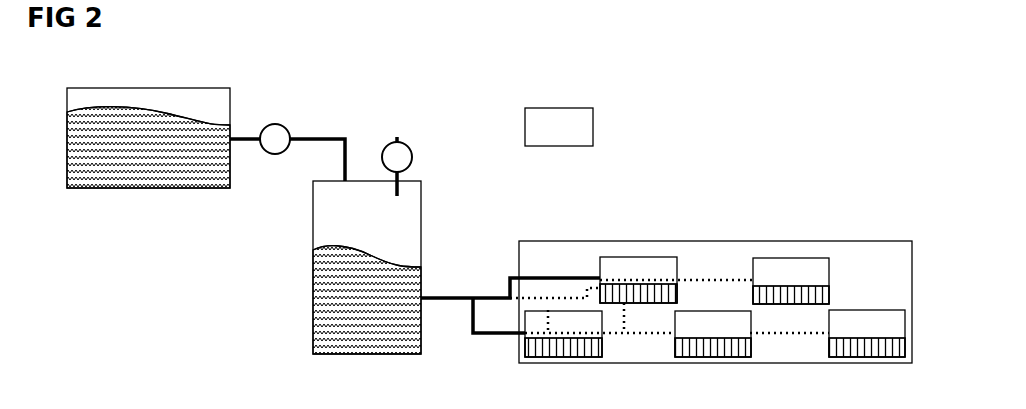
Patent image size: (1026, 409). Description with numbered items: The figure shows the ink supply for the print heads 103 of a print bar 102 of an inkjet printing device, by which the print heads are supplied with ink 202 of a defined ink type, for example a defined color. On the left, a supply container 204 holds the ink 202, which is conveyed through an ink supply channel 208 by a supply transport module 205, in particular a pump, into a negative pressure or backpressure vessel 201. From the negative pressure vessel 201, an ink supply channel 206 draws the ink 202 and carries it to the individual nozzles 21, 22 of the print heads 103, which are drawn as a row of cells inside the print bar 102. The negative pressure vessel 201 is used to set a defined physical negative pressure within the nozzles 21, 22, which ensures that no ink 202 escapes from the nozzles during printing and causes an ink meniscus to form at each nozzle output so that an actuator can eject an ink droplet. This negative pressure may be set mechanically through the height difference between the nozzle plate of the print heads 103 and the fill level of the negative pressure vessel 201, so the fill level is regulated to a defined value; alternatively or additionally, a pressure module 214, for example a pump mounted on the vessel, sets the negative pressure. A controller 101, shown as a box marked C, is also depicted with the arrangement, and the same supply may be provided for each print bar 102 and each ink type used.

The controller 101 is at (593, 131).
The print bar 102 is at (597, 241).
The print head 103 is at (780, 262).
The nozzle 21 is at (812, 288).
The nozzle 22 is at (715, 320).
The negative pressure vessel 201 is at (421, 211).
The ink 202 is at (106, 180).
The supply container 204 is at (160, 188).
The supply transport module 205 is at (272, 124).
The ink supply channel 206 is at (562, 278).
The ink supply channel 208 is at (337, 137).
The pressure module 214 is at (411, 147).